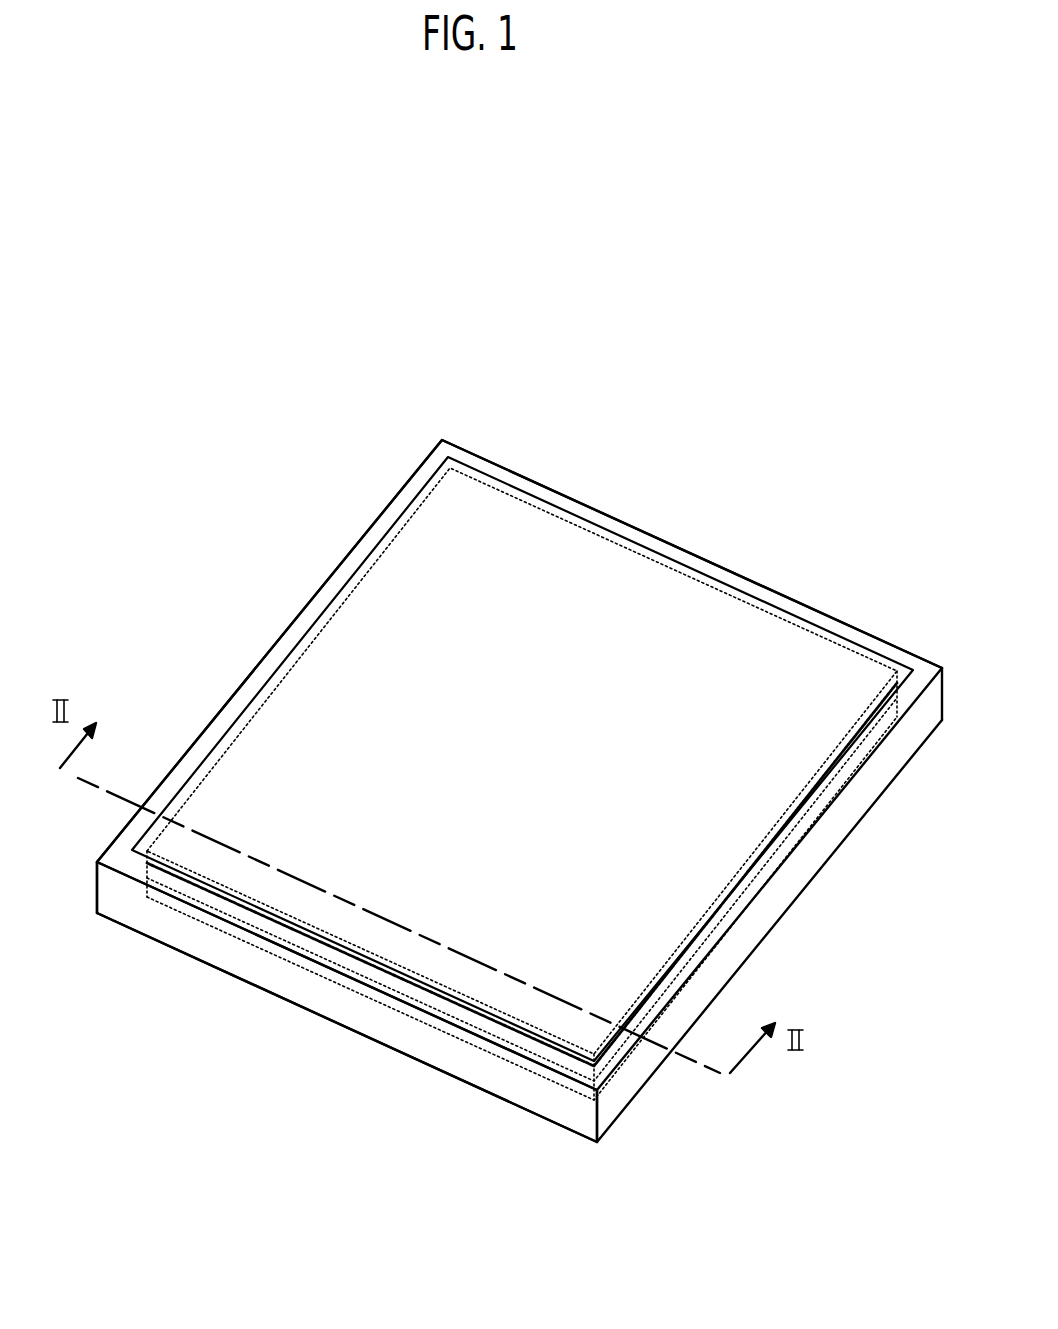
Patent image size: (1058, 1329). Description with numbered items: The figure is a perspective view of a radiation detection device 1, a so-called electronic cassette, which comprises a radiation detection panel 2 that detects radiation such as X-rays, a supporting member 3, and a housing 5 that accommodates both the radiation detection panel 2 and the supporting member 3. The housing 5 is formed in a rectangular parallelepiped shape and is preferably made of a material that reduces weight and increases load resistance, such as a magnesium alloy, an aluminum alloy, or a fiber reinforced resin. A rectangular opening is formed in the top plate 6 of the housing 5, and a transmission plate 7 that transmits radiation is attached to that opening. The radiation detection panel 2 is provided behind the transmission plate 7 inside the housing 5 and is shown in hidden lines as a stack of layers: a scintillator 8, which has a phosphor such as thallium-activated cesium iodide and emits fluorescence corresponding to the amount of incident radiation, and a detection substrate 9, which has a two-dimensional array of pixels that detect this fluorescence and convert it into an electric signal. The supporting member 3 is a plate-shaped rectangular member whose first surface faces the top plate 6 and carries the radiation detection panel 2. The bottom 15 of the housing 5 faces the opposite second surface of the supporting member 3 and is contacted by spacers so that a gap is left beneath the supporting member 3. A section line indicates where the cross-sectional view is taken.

The radiation detection device 1 is at (919, 386).
The radiation detection panel 2 is at (511, 841).
The supporting member 3 is at (573, 1075).
The housing 5 is at (855, 849).
The top plate 6 is at (442, 440).
The transmission plate 7 is at (345, 584).
The scintillator 8 is at (231, 902).
The detection substrate 9 is at (185, 865).
The bottom 15 is at (288, 1003).